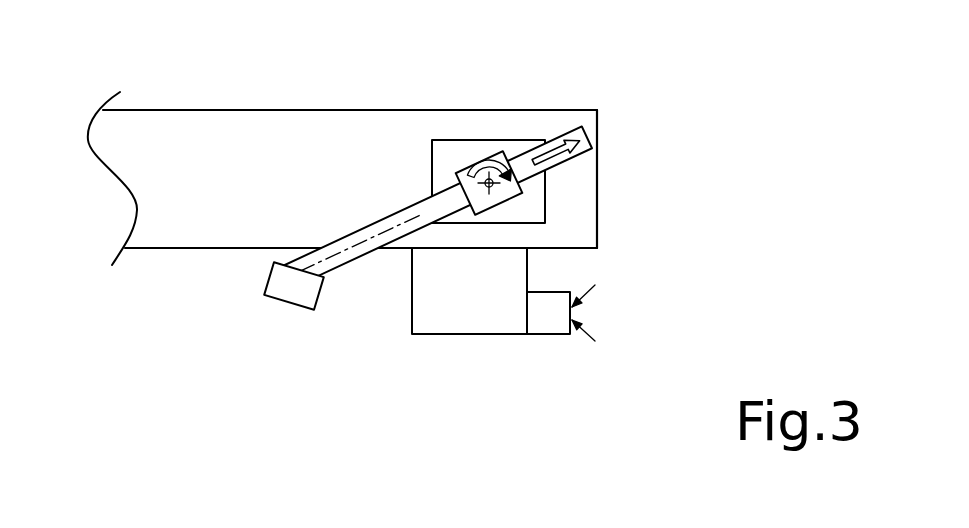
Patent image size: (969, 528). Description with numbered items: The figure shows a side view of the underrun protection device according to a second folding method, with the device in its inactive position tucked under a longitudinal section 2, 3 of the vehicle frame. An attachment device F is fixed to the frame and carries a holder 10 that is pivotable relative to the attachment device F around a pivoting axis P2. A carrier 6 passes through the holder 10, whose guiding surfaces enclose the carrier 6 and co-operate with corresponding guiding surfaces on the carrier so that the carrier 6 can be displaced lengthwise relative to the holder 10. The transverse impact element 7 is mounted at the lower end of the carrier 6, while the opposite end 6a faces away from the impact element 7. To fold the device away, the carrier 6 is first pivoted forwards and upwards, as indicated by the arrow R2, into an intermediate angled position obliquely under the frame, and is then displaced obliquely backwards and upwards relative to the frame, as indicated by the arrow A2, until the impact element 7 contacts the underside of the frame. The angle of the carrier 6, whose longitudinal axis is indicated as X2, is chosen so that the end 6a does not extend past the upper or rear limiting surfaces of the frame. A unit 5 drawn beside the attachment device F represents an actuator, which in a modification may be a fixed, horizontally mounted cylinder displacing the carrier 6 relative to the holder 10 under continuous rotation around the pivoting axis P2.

The longitudinal section 2 is at (238, 193).
The longitudinal section 3 is at (407, 138).
The drive unit 5 is at (500, 322).
The carrier 6 is at (407, 231).
The end of the carrier 6a is at (607, 90).
The impact element 7 is at (268, 286).
The holder 10 is at (522, 174).
The attachment device F is at (432, 168).
The arrow R2 is at (482, 148).
The arrow A2 is at (534, 90).
The pivoting axis P2 is at (503, 195).
The longitudinal axis of arm X2 is at (364, 246).